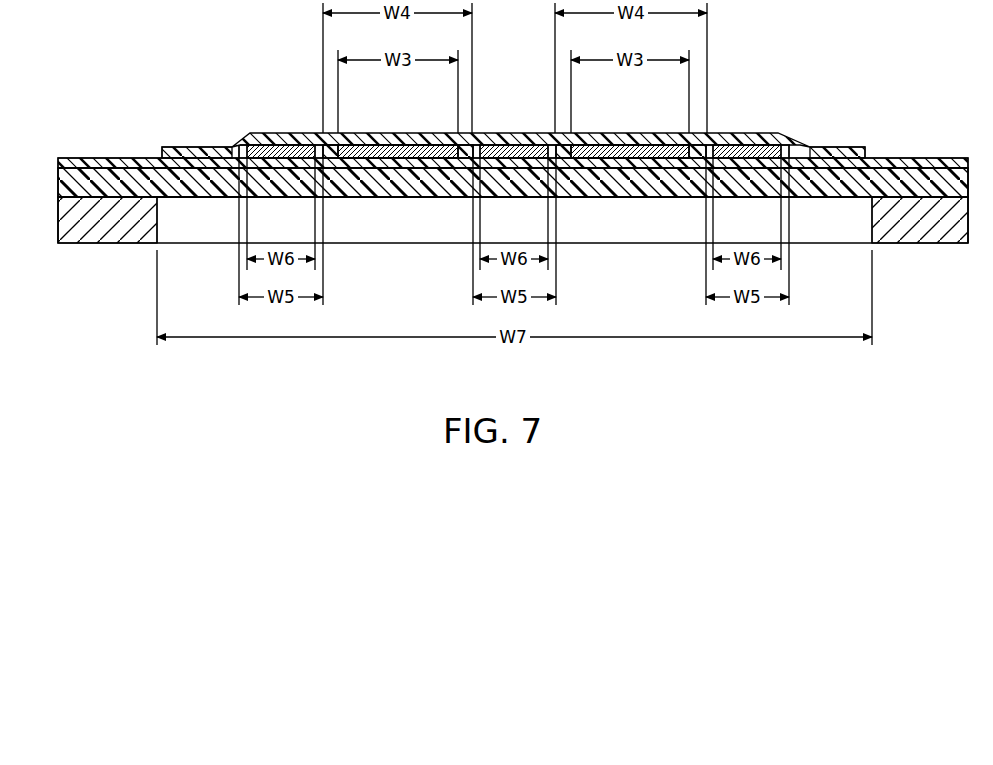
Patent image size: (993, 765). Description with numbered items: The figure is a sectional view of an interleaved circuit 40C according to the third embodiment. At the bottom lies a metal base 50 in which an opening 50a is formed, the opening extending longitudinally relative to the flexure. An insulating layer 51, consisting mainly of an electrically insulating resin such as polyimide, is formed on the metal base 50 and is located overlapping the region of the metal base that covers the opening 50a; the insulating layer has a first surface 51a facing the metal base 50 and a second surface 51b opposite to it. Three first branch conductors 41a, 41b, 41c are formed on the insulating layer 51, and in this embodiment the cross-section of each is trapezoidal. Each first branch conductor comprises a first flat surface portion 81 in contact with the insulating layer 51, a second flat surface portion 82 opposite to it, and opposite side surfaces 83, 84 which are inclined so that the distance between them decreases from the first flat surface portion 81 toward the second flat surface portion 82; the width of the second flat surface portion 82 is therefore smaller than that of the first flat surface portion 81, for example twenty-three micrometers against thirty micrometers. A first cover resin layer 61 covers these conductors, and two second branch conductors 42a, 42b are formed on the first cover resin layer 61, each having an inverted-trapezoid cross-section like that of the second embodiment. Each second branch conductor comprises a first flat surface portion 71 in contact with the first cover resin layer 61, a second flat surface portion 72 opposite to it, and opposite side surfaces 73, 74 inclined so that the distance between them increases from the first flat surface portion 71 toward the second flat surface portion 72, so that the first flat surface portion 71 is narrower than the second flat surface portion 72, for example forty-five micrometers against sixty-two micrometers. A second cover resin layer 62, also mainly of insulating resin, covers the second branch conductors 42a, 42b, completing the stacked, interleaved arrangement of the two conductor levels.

The interleaved circuit 40C is at (841, 52).
The metal base 50 is at (122, 238).
The opening 50a is at (654, 244).
The insulating layer 51 is at (403, 182).
The first surface 51a is at (194, 200).
The second surface 51b is at (220, 147).
The first cover resin layer 61 is at (441, 168).
The second cover resin layer 62 is at (740, 140).
The first flat surface portion 71 is at (372, 166).
The second flat surface portion 72 is at (372, 138).
The side surface 73 is at (328, 148).
The side surface 74 is at (478, 138).
The first flat surface portion 81 is at (276, 168).
The second flat surface portion 82 is at (276, 140).
The side surface 83 is at (243, 170).
The side surface 84 is at (320, 170).
The first branch conductor 41a is at (300, 168).
The first branch conductor 41b is at (531, 168).
The first branch conductor 41c is at (753, 168).
The second branch conductor 42a is at (433, 148).
The second branch conductor 42b is at (634, 148).